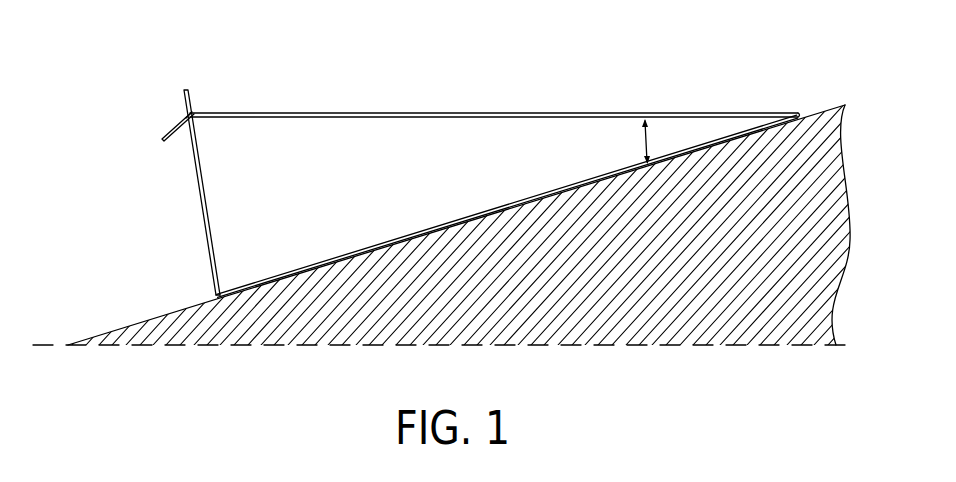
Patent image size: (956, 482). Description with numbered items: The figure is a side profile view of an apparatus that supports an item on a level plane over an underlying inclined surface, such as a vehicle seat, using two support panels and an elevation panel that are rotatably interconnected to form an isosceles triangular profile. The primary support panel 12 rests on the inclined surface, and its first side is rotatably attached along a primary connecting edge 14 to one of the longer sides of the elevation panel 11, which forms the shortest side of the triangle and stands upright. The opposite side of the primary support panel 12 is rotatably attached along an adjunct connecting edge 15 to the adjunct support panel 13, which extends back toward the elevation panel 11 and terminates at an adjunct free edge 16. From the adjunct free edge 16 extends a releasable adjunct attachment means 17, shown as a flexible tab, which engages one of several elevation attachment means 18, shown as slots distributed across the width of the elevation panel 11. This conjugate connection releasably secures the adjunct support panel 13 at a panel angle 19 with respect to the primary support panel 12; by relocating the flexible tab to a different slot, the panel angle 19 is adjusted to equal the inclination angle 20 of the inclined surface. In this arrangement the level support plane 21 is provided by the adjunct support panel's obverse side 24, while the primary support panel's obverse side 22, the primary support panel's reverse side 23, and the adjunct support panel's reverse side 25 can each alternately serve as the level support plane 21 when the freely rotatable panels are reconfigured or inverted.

The elevation panel 11 is at (464, 155).
The primary support panel 12 is at (507, 206).
The adjunct support panel 13 is at (516, 104).
The primary connecting edge 14 is at (222, 288).
The adjunct connecting edge 15 is at (797, 112).
The adjunct free edge 16 is at (193, 113).
The adjunct attachment means 17 is at (164, 138).
The elevation attachment means 18 is at (178, 141).
The panel angle 19 is at (642, 140).
The inclination angle 20 is at (182, 318).
The level support plane 21 is at (516, 104).
The primary support panel's obverse side 22 is at (494, 249).
The primary support panel's reverse side 23 is at (521, 202).
The adjunct support panel's obverse side 24 is at (370, 112).
The adjunct support panel's reverse side 25 is at (340, 118).